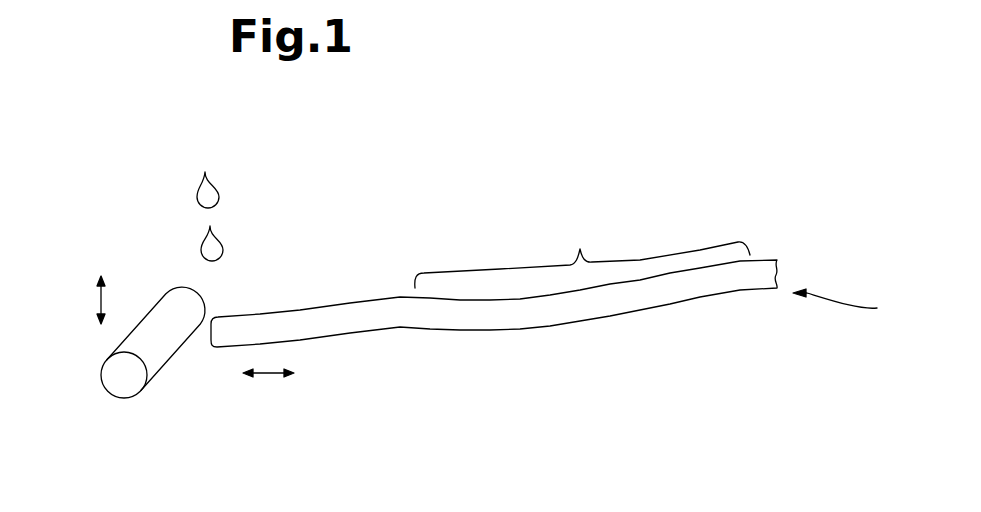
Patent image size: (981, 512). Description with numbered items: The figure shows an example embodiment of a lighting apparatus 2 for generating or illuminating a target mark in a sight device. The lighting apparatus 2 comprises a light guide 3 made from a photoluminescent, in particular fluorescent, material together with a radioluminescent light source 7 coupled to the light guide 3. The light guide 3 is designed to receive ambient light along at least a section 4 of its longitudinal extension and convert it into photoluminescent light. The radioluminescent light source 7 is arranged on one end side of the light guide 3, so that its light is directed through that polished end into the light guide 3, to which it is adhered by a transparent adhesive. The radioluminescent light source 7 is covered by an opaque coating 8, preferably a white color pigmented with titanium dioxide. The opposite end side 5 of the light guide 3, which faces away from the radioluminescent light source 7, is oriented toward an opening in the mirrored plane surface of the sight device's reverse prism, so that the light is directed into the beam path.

The lighting apparatus 2 is at (148, 154).
The light guide 3 is at (395, 316).
The section 4 is at (582, 252).
The end side 5 is at (846, 305).
The radioluminescent light source 7 is at (125, 380).
The opaque coating 8 is at (160, 300).